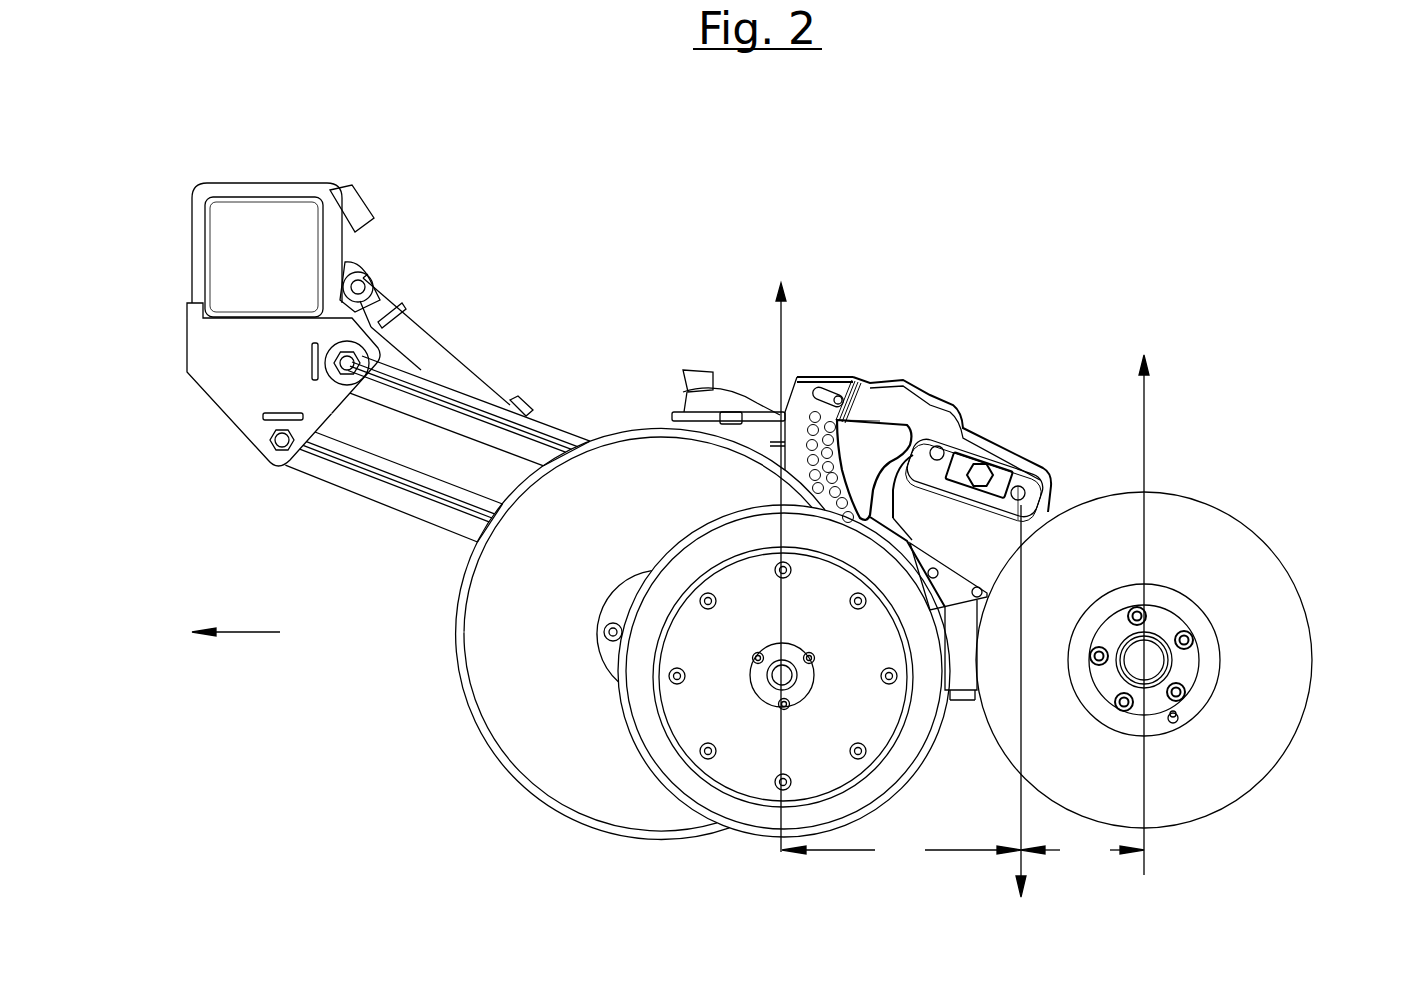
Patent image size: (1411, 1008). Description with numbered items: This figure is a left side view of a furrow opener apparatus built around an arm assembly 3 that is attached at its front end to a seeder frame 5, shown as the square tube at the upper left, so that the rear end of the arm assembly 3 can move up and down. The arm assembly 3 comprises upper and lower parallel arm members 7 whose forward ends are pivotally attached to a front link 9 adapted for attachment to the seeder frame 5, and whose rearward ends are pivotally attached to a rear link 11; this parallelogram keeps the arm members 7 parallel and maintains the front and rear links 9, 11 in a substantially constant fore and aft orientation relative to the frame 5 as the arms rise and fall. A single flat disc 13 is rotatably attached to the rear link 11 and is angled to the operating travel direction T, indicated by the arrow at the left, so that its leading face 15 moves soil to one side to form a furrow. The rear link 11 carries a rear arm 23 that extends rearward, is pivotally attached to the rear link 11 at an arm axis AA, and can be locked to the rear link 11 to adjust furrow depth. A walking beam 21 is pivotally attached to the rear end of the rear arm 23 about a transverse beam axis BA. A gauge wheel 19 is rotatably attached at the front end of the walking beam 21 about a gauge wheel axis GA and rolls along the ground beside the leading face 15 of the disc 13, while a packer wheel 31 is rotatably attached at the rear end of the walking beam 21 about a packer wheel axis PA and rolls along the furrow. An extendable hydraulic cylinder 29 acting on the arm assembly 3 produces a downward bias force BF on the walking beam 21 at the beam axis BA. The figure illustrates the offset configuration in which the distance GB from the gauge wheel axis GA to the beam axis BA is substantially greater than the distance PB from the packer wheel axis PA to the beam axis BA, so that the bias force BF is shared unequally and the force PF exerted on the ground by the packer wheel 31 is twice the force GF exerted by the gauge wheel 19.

The arm assembly 3 is at (387, 543).
The seeder frame 5 is at (257, 260).
The parallel arm members 7 is at (477, 399).
The front link 9 is at (222, 410).
The rear link 11 is at (833, 377).
The disc 13 is at (490, 748).
The leading face 15 is at (490, 645).
The gauge wheel 19 is at (778, 691).
The walking beam 21 is at (958, 700).
The rear arm 23 is at (965, 437).
The hydraulic cylinder 29 is at (458, 360).
The packer wheel 31 is at (1178, 660).
The gauge wheel axis GA is at (777, 675).
The packer wheel axis PA is at (1152, 658).
The gauge wheel force GF is at (781, 552).
The packer wheel force PF is at (1145, 596).
The downward bias force BF is at (1021, 716).
The arm axis AA is at (915, 440).
The beam axis BA is at (1022, 482).
The gauge wheel to beam axis distance GB is at (901, 850).
The packer wheel to beam axis distance PB is at (1082, 850).
The operating travel direction T is at (221, 633).